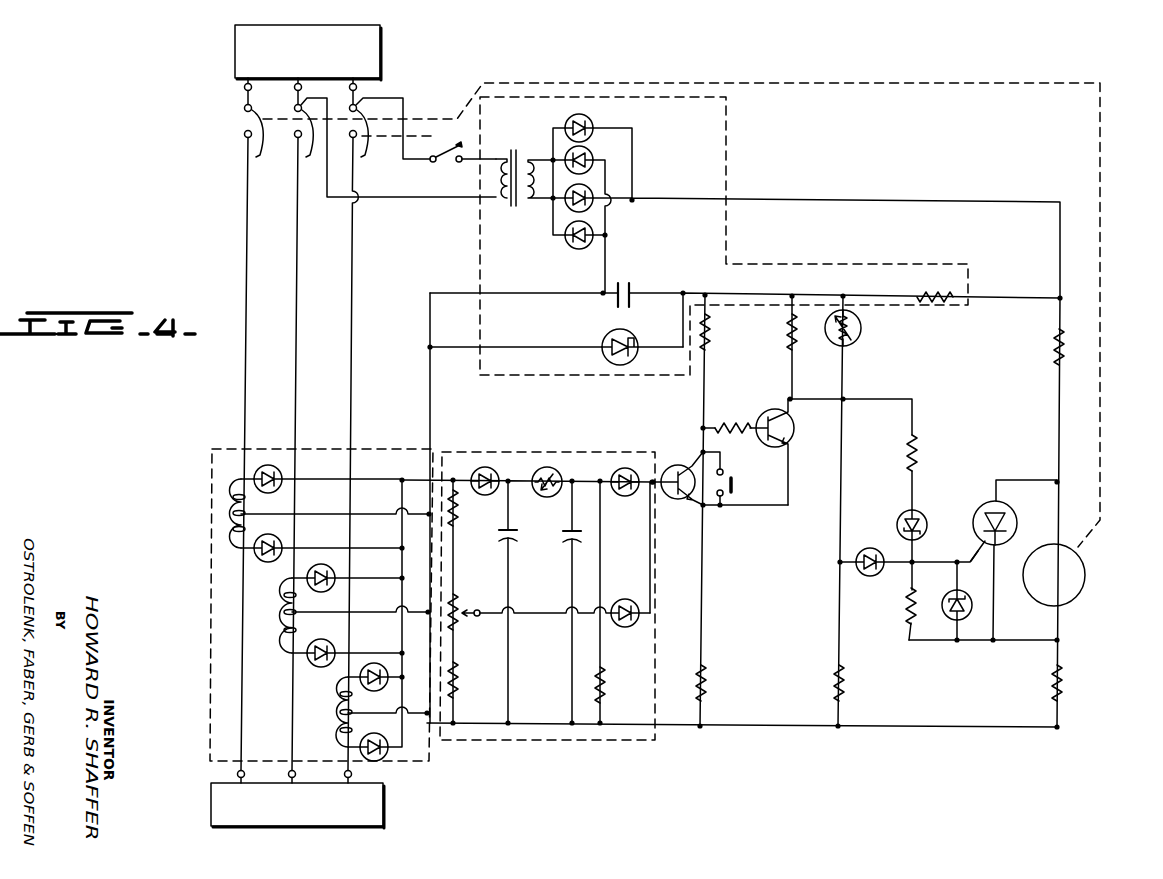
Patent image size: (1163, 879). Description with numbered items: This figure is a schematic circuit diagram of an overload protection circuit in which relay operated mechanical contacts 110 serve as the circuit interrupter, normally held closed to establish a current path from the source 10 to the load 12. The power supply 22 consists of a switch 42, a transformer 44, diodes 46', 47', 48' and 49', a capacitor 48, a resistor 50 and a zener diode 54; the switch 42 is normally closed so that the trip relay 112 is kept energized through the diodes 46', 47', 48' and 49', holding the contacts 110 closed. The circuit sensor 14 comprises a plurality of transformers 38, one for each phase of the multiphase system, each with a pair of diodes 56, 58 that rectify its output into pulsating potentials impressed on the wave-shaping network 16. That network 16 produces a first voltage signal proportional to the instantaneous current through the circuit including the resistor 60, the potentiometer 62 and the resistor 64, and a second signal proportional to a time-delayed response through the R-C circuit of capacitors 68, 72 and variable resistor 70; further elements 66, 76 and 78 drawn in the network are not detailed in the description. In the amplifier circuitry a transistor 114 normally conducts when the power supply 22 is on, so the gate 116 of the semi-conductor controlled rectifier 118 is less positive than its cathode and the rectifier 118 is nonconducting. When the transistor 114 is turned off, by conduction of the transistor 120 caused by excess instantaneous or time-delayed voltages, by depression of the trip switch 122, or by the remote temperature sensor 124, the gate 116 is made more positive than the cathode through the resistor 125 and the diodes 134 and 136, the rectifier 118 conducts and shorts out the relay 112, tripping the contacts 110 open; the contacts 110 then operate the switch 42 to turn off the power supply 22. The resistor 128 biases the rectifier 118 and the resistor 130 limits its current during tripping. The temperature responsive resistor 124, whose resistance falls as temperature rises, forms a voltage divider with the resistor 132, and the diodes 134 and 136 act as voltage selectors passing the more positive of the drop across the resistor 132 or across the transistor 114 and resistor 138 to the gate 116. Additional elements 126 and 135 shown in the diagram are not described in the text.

The source 10 is at (233, 51).
The load 12 is at (386, 800).
The circuit sensor 14 is at (212, 537).
The wave-shaping network 16 is at (590, 748).
The power supply 22 is at (727, 146).
The transformer 38 is at (236, 547).
The switch 42 is at (440, 167).
The transformer 44 is at (534, 150).
The diode 46' is at (608, 124).
The diode 47' is at (594, 152).
The diode 48' is at (565, 191).
The diode 49' is at (558, 245).
The capacitor 48 is at (640, 280).
The resistor 50 is at (918, 294).
The zener diode 54 is at (634, 330).
The diode 56 is at (274, 465).
The diode 58 is at (260, 562).
The resistor 60 is at (458, 510).
The potentiometer 62 is at (463, 626).
The resistor 64 is at (458, 689).
The diode 66 is at (492, 466).
The capacitor 68 is at (500, 548).
The variable resistor 70 is at (538, 498).
The capacitor 72 is at (566, 546).
The diode 76 is at (622, 498).
The diode 78 is at (622, 628).
The mechanical contacts 110 is at (321, 145).
The trip relay 112 is at (1086, 575).
The transistor 114 is at (762, 414).
The gate 116 is at (970, 551).
The semi-conductor controlled rectifier 118 is at (975, 511).
The transistor 120 is at (690, 460).
The trip switch 122 is at (735, 463).
The temperature responsive variable resistor 124 is at (862, 330).
The resistor 125 is at (902, 609).
The zener diode 126 is at (943, 622).
The resistor 128 is at (1068, 682).
The resistor 130 is at (1055, 342).
The resistor 132 is at (833, 684).
The diode 134 is at (879, 548).
The resistor 135 is at (920, 454).
The diode 136 is at (897, 517).
The resistor 138 is at (712, 687).